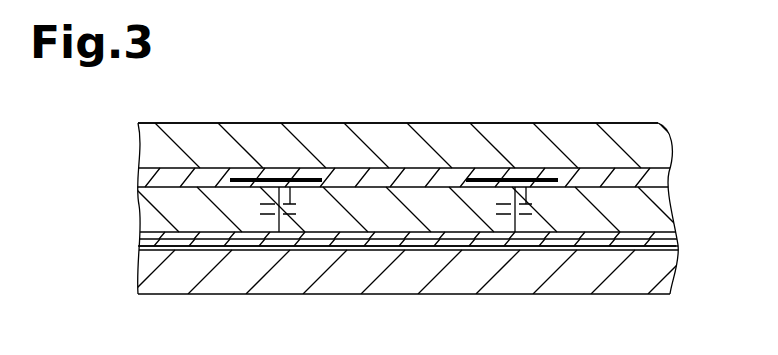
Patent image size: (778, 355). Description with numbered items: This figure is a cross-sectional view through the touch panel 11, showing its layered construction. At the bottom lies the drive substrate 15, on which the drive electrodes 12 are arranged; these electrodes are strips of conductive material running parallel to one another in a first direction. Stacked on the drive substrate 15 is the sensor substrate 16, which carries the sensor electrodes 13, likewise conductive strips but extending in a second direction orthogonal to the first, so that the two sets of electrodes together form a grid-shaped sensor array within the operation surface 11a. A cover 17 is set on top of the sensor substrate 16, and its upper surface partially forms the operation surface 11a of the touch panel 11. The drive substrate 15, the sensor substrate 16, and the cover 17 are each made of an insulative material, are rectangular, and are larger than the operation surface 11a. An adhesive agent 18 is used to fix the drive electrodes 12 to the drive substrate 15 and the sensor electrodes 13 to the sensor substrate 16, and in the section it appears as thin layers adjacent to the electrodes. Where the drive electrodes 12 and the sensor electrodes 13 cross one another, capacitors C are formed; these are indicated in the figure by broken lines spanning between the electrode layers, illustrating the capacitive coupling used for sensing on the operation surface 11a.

The touch panel 11 is at (664, 76).
The operation surface 11a is at (648, 122).
The drive electrodes 12 is at (377, 247).
The sensor electrodes 13 is at (275, 177).
The drive substrate 15 is at (139, 262).
The sensor substrate 16 is at (138, 212).
The cover 17 is at (139, 151).
The adhesive agent 18 is at (662, 173).
The capacitors C is at (290, 172).